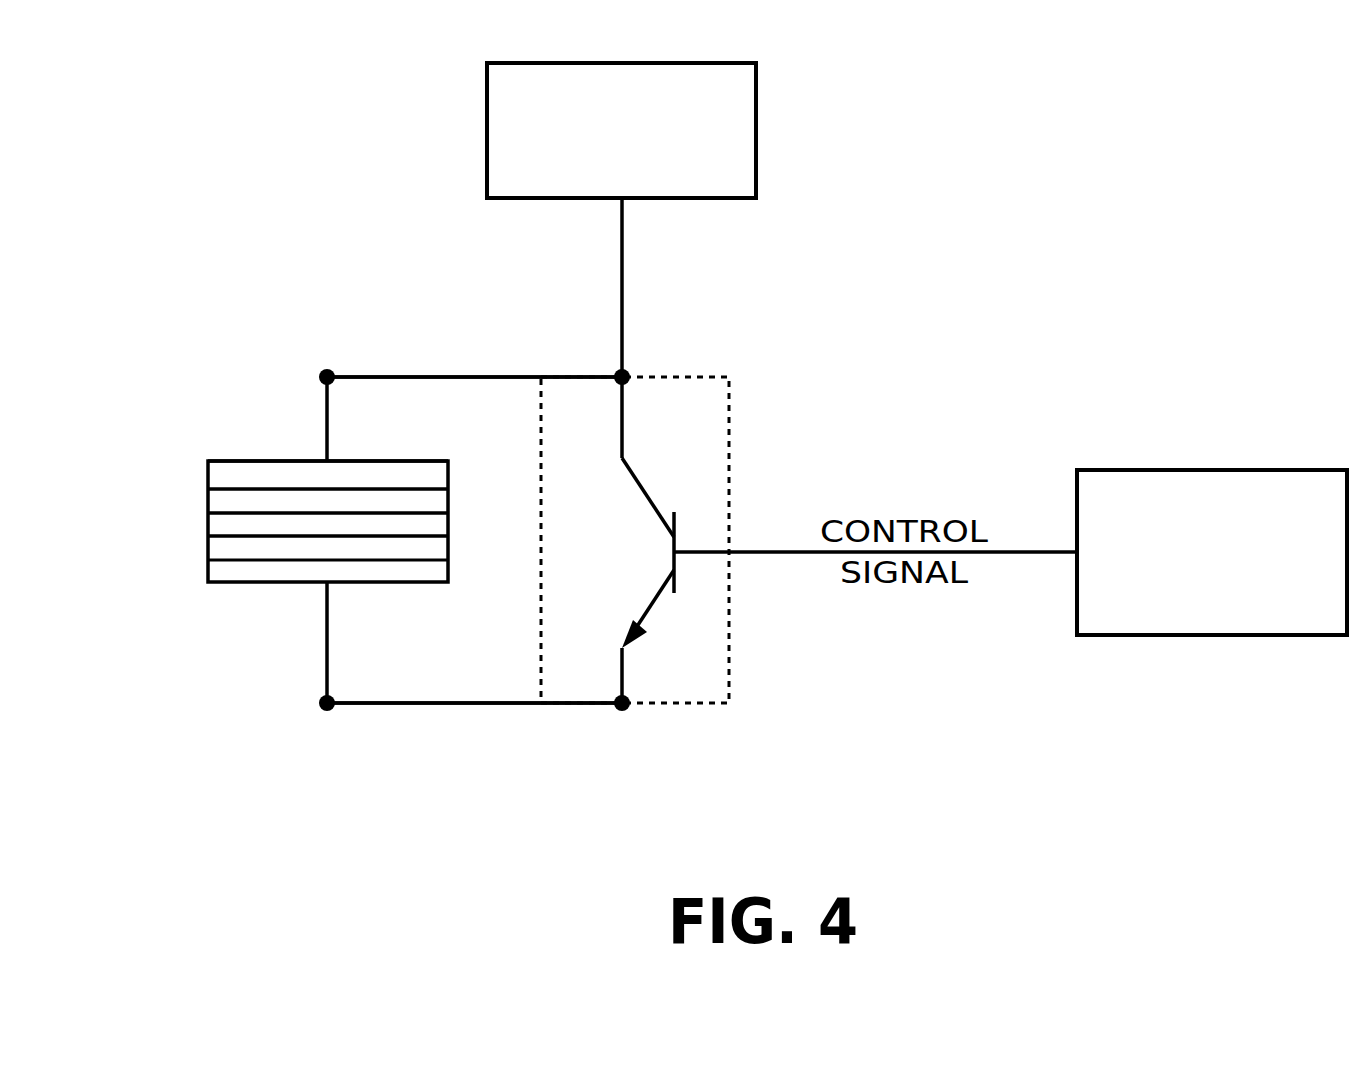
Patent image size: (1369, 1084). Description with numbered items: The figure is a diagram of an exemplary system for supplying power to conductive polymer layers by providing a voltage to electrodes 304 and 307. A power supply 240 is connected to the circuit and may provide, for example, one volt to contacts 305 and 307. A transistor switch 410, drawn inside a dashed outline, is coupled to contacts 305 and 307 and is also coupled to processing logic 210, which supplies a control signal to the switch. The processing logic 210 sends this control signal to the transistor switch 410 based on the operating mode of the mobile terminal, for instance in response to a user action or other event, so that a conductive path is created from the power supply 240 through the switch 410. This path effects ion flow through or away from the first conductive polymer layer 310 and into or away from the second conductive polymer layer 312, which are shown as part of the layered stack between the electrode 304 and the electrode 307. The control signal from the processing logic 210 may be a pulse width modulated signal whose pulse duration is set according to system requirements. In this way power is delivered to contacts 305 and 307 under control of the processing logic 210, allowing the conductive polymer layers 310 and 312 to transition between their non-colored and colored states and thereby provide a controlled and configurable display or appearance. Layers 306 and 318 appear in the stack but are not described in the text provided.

The power supply 240 is at (621, 130).
The processing logic 210 is at (1212, 552).
The transistor switch 410 is at (710, 423).
The electrode 304 is at (277, 572).
The top layer 306 is at (250, 472).
The second conductive polymer layer 312 is at (250, 498).
The first conductive polymer layer 310 is at (233, 547).
The layer 318 is at (425, 523).
The electrode 307 is at (447, 377).
The contact 305 is at (440, 705).